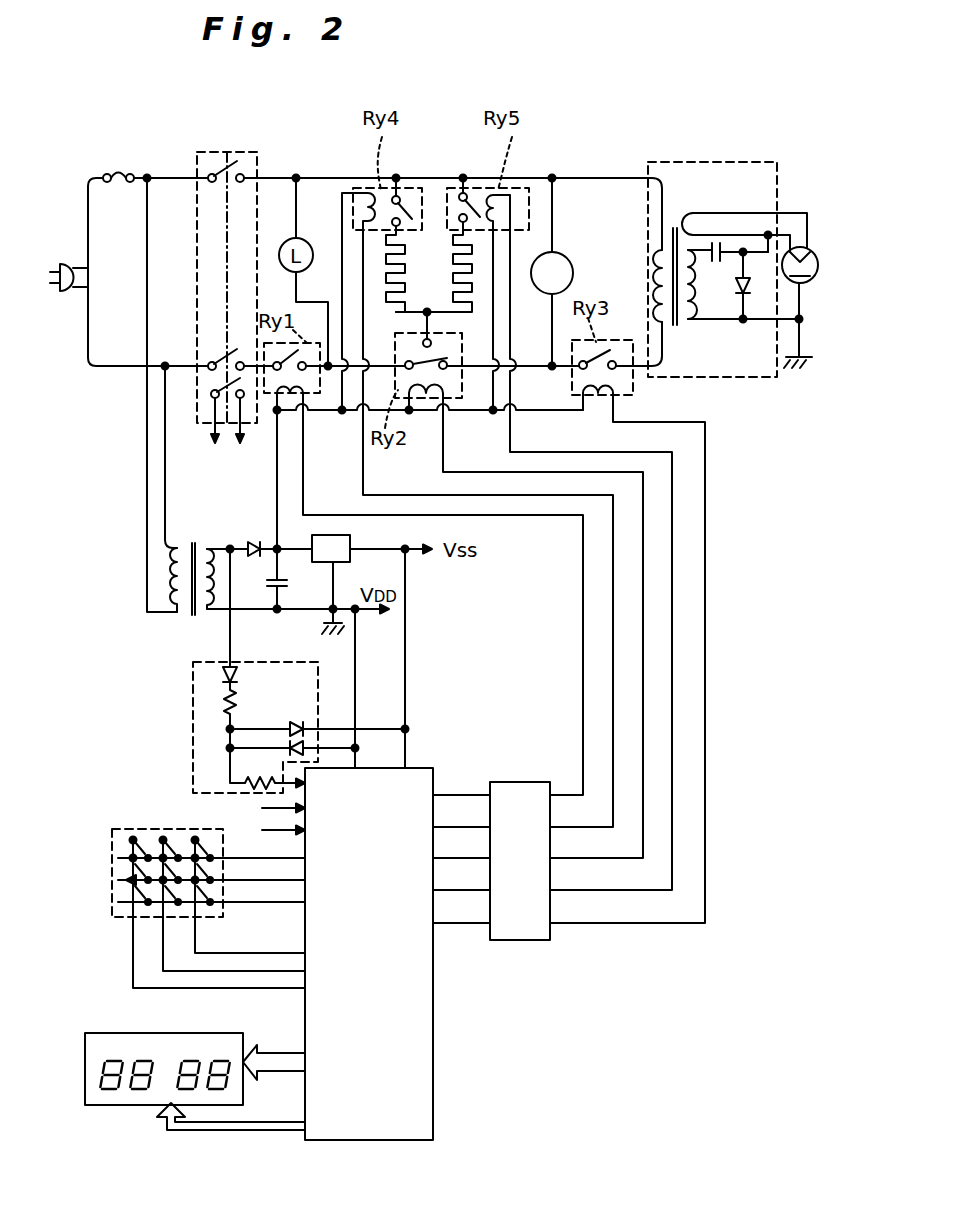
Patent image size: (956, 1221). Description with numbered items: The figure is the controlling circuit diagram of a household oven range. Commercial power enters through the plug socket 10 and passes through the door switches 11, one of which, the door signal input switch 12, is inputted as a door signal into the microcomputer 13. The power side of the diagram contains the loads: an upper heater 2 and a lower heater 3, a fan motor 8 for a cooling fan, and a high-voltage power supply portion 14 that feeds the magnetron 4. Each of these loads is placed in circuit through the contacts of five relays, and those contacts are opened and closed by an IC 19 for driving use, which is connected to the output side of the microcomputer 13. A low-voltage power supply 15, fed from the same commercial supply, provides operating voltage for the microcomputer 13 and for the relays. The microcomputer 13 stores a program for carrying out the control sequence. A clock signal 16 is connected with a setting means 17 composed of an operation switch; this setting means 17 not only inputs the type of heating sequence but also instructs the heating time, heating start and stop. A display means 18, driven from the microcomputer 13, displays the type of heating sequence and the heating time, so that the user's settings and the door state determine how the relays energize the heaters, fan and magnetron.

The upper heater 2 is at (403, 272).
The lower heater 3 is at (452, 263).
The magnetron 4 is at (816, 252).
The fan motor 8 is at (566, 259).
The plug socket 10 is at (66, 258).
The door switches 11 is at (222, 150).
The door signal input switch 12 is at (213, 397).
The microcomputer 13 is at (388, 958).
The high-voltage power supply portion 14 is at (707, 160).
The low-voltage power supply 15 is at (190, 617).
The clock signal 16 is at (200, 718).
The setting means 17 is at (112, 870).
The display means 18 is at (105, 1032).
The IC for driving use 19 is at (537, 940).